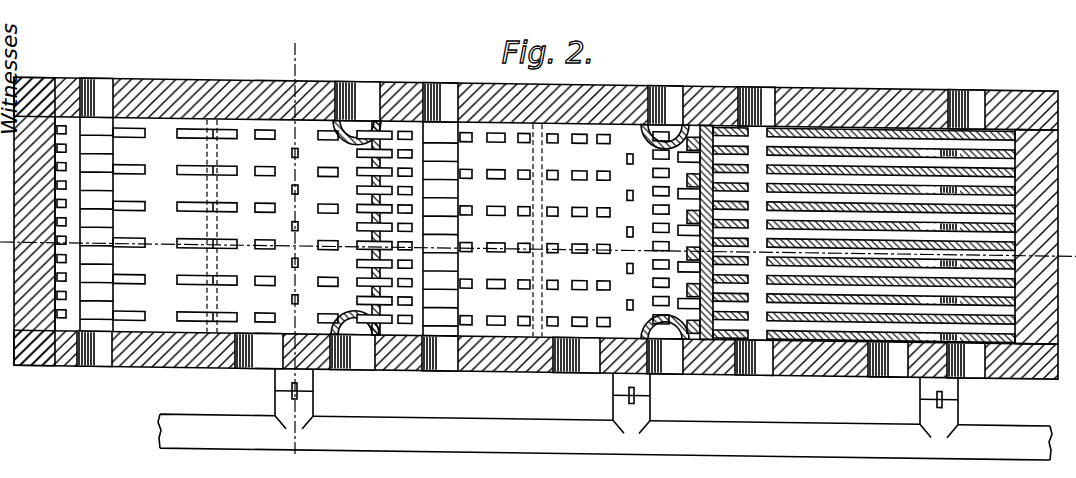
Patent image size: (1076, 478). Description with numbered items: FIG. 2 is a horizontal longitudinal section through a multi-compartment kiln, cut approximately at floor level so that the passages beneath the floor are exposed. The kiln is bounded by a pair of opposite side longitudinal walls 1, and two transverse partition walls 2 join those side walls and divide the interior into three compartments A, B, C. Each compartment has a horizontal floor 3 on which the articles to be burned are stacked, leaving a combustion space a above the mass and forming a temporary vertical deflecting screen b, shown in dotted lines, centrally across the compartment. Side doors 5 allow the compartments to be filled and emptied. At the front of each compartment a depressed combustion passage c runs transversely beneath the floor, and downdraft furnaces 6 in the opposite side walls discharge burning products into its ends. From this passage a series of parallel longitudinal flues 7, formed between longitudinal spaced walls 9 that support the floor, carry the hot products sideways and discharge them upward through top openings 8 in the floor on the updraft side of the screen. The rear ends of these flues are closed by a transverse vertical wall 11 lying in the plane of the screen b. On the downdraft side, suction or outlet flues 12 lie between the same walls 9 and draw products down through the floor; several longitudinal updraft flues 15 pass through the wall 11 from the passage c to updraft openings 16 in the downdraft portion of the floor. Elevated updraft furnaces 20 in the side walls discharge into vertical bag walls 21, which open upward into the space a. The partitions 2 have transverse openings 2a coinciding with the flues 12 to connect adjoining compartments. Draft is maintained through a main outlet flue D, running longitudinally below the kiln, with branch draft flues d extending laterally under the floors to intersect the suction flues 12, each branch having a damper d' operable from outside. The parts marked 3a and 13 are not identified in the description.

The side longitudinal walls 1 is at (510, 383).
The transverse partition walls 2 is at (390, 112).
The transverse vertical openings 2a is at (357, 278).
The horizontal floor 3 is at (194, 225).
The plates 3a is at (266, 134).
The side doors 5 is at (877, 381).
The downdraft furnaces 6 is at (97, 92).
The longitudinal flues 7 is at (768, 160).
The top openings 8 is at (67, 296).
The longitudinal spaced walls 9 is at (812, 140).
The transverse vertical wall 11 is at (867, 157).
The suction or outlet flues 12 is at (1018, 172).
The axis line 13 is at (1060, 253).
The longitudinal updraft flues 15 is at (913, 157).
The updraft openings 16 is at (299, 221).
The elevated updraft furnaces 20 is at (353, 110).
The vertical bag walls 21 is at (348, 141).
The compartment A is at (166, 257).
The compartment B is at (665, 68).
The compartment C is at (860, 48).
The main outlet flue D is at (605, 437).
The longitudinal combustion space a is at (93, 200).
The deflecting screen or partition b is at (218, 132).
The depressed combustion passage c is at (88, 322).
The branch draft flues d is at (636, 404).
The damper d' is at (595, 397).